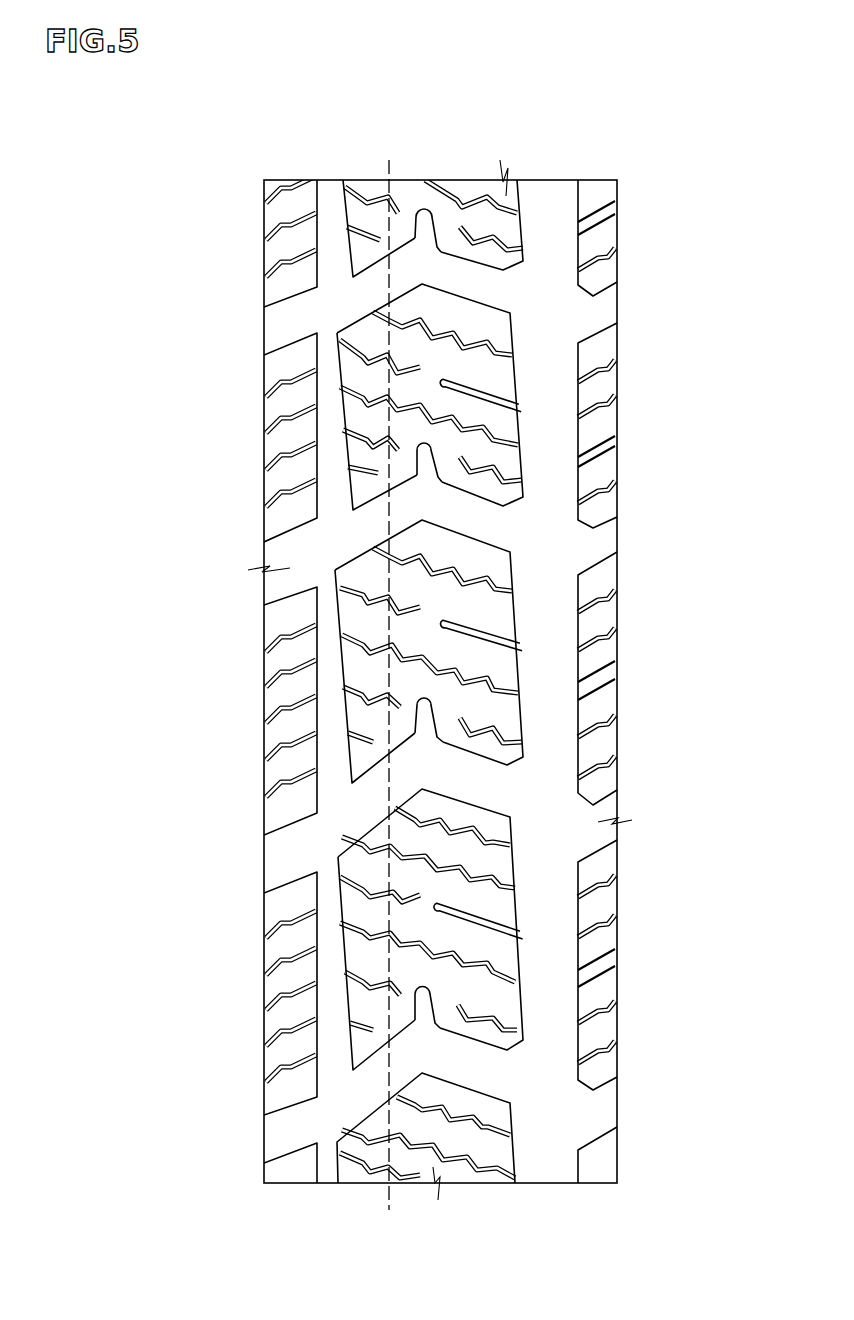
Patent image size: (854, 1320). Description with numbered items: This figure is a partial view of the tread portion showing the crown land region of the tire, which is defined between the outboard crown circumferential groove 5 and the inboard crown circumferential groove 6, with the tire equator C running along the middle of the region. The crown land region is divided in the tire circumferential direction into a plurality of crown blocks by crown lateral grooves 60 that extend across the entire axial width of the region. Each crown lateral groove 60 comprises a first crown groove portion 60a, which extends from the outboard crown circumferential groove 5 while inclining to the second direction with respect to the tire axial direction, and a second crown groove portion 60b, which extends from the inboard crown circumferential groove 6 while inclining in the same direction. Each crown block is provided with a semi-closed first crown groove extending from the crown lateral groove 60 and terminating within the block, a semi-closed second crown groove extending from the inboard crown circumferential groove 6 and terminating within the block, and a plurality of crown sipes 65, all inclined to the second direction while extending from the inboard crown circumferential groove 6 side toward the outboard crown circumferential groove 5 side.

The outboard crown circumferential groove 5 is at (337, 208).
The inboard crown circumferential groove 6 is at (543, 211).
The crown lateral groove 60 is at (690, 403).
The first crown groove portion 60a is at (402, 502).
The second crown groove portion 60b is at (476, 508).
The crown sipe 65 is at (355, 345).
The tire equator C is at (388, 668).